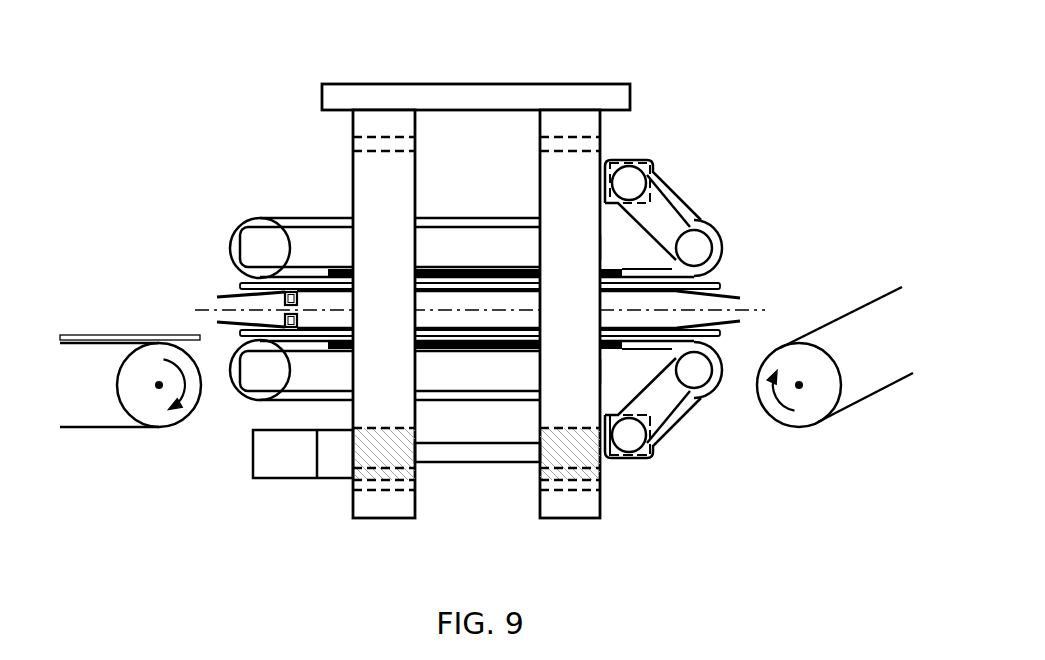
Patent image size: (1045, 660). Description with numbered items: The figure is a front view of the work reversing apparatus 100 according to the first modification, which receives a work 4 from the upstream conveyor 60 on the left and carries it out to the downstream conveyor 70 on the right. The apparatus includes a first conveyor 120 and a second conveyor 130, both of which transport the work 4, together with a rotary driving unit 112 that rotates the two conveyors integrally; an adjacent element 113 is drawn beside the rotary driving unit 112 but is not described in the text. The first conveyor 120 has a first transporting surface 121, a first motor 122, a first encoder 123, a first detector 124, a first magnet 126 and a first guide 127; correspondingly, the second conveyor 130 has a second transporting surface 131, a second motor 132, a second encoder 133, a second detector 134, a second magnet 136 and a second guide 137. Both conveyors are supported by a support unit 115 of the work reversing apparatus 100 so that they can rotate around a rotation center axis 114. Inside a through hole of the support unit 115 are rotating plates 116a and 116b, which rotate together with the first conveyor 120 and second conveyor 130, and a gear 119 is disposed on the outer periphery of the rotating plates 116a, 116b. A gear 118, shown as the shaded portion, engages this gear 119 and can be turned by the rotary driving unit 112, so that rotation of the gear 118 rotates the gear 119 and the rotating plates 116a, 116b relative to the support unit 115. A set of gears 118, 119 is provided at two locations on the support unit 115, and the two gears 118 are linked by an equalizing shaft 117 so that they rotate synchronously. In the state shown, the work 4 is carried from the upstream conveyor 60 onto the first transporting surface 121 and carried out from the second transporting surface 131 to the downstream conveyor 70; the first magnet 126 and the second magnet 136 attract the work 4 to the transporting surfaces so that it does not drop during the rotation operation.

The work reversing apparatus 100 is at (305, 83).
The support unit 115 is at (360, 84).
The gear 119 is at (392, 148).
The second motor 132 is at (636, 160).
The second encoder 133 is at (630, 183).
The second conveyor 130 is at (706, 188).
The second magnet 136 is at (441, 268).
The rotating plate 116b is at (513, 235).
The rotation center axis 114 is at (472, 268).
The work 4 is at (140, 335).
The second guide 137 is at (736, 292).
The second transporting surface 131 is at (240, 282).
The second detector 134 is at (285, 297).
The first detector 124 is at (285, 322).
The first transporting surface 121 is at (232, 356).
The upstream conveyor 60 is at (91, 428).
The rotating plate 116a is at (459, 372).
The first magnet 126 is at (503, 350).
The first guide 127 is at (722, 336).
The downstream conveyor 70 is at (853, 406).
The first conveyor 120 is at (690, 421).
The gear 118 is at (415, 460).
The equalizing shaft 117 is at (486, 460).
The first motor 122 is at (650, 455).
The first encoder 123 is at (630, 435).
The rotary driving unit 112 is at (286, 476).
The controller 113 is at (341, 462).